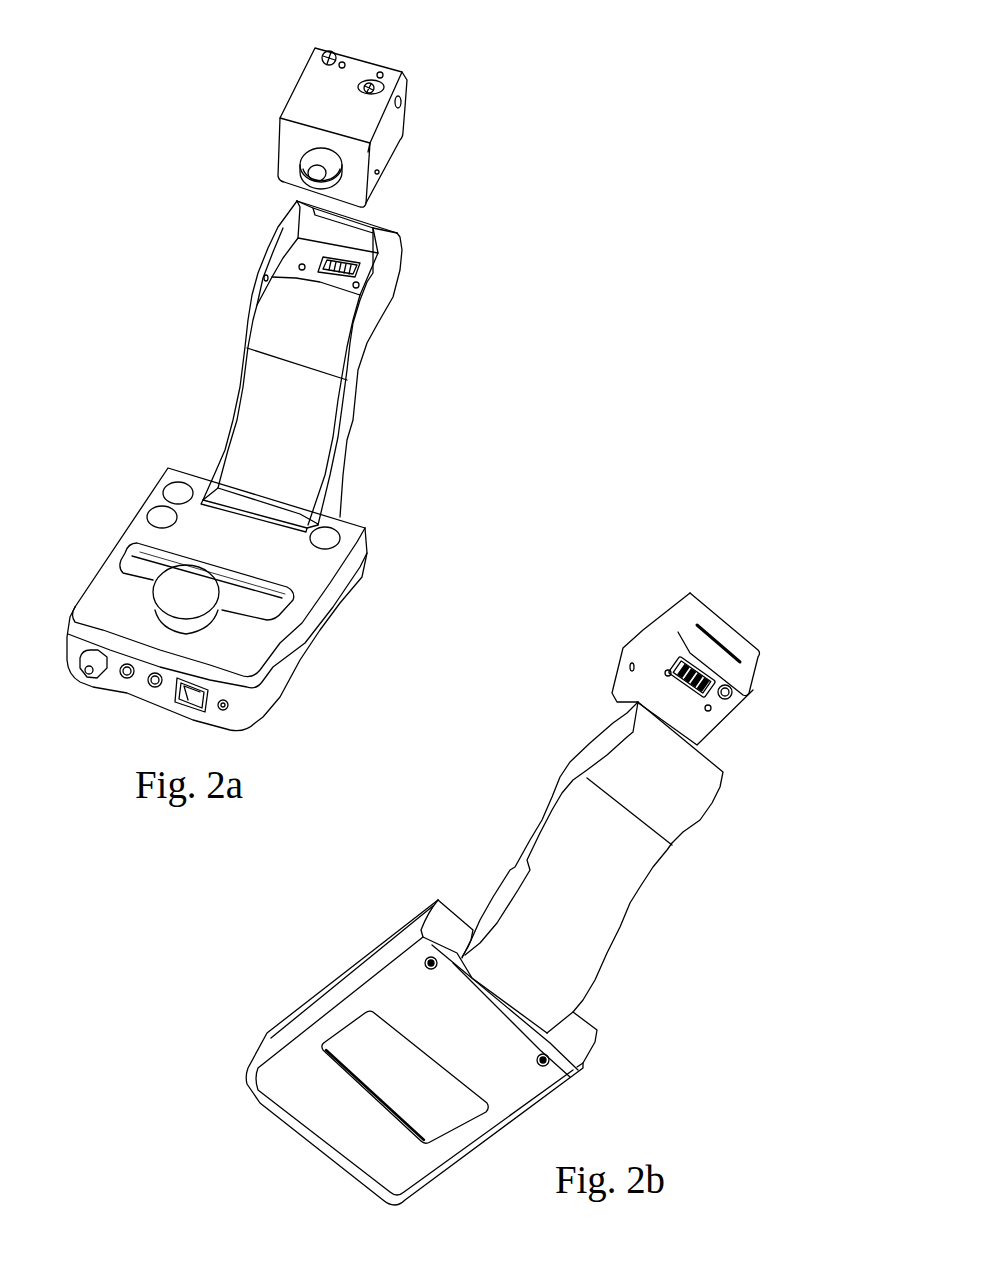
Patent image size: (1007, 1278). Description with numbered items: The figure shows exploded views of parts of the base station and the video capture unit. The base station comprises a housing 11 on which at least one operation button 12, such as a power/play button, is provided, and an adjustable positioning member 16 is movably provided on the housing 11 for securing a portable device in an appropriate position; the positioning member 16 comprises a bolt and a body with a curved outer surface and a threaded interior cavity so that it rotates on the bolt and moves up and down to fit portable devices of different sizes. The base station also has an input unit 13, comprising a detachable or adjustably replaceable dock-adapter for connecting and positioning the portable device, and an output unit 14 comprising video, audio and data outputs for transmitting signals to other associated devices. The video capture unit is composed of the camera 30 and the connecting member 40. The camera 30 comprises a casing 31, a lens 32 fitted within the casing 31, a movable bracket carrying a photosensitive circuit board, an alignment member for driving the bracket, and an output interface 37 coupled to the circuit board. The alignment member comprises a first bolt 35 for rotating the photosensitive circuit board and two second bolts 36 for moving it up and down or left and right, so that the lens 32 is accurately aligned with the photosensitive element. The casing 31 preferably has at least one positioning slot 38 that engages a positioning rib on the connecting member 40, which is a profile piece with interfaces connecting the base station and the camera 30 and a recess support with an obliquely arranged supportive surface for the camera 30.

In FIG. 2A, the housing 11 is at (217, 615).
In FIG. 2A, the operation button 12 is at (167, 493).
In FIG. 2A, the input unit 13 is at (268, 609).
In FIG. 2A, the output unit 14 is at (138, 690).
In FIG. 2A, the positioning member 16 is at (187, 605).
In FIG. 2A, the camera 30 is at (344, 112).
In FIG. 2A, the casing 31 is at (295, 95).
In FIG. 2A, the lens 32 is at (308, 170).
In FIG. 2A, the first bolt 35 is at (385, 87).
In FIG. 2A, the second bolts 36 is at (333, 55).
In FIG. 2B, the output interface 37 is at (723, 677).
In FIG. 2B, the positioning slot 38 is at (730, 648).
In FIG. 2A, the connecting member 40 is at (383, 352).